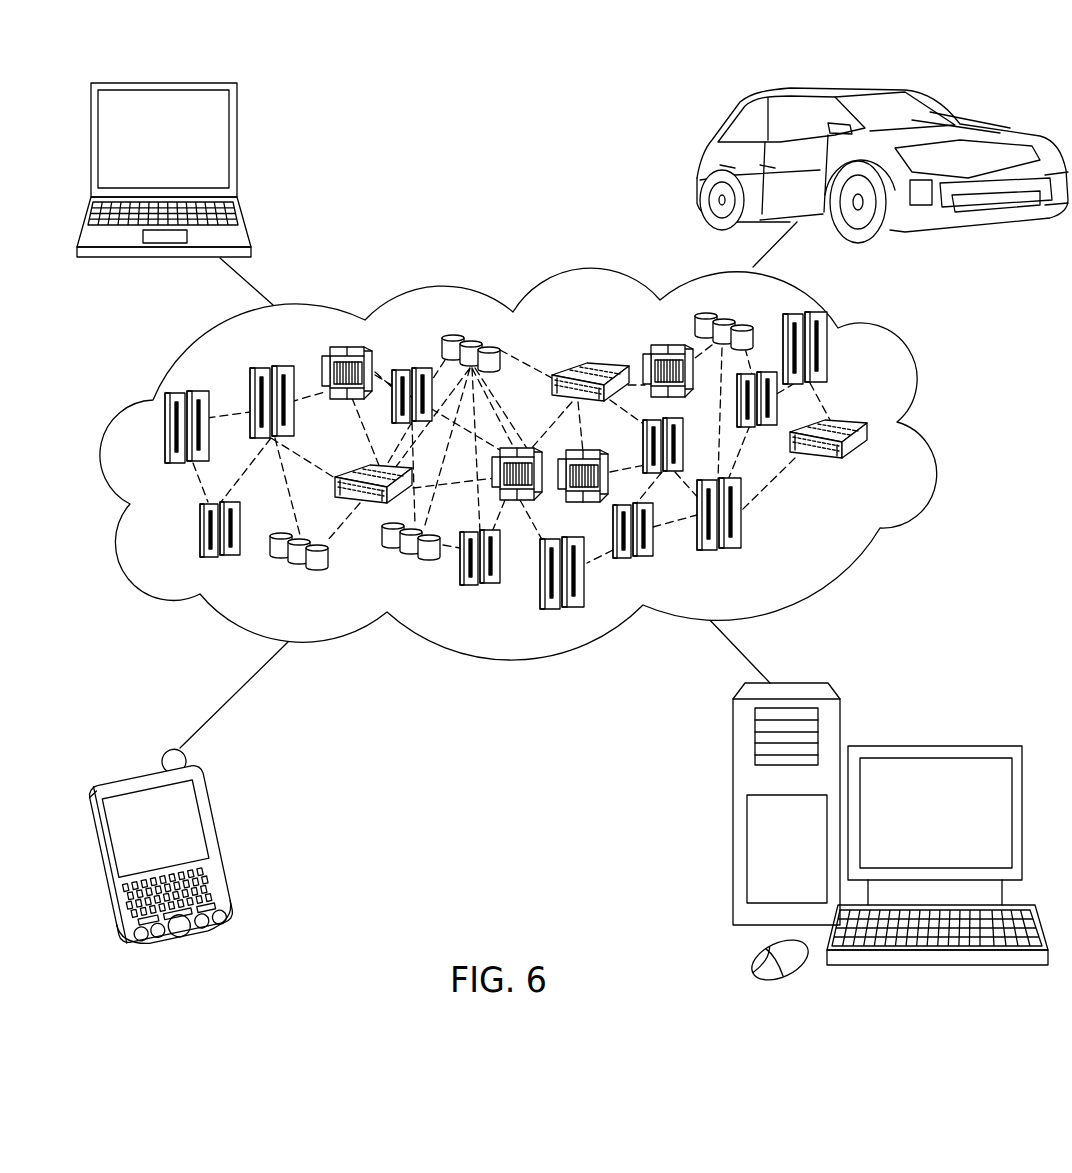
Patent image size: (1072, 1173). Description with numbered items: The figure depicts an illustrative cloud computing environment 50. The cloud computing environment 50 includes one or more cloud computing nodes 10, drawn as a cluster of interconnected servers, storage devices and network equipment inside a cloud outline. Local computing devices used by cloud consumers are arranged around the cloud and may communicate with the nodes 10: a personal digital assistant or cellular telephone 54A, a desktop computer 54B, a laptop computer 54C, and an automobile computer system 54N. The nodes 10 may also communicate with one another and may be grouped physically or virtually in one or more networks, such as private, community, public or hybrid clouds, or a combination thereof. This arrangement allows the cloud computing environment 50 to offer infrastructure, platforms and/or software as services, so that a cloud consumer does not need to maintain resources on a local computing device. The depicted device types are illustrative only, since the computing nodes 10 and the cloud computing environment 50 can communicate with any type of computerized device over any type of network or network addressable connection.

The cloud computing node 10 is at (872, 472).
The cloud computing environment 50 is at (544, 464).
The personal digital assistant (PDA) or cellular telephone 54A is at (227, 843).
The desktop computer 54B is at (930, 746).
The laptop computer 54C is at (238, 148).
The automobile computer system 54N is at (698, 164).